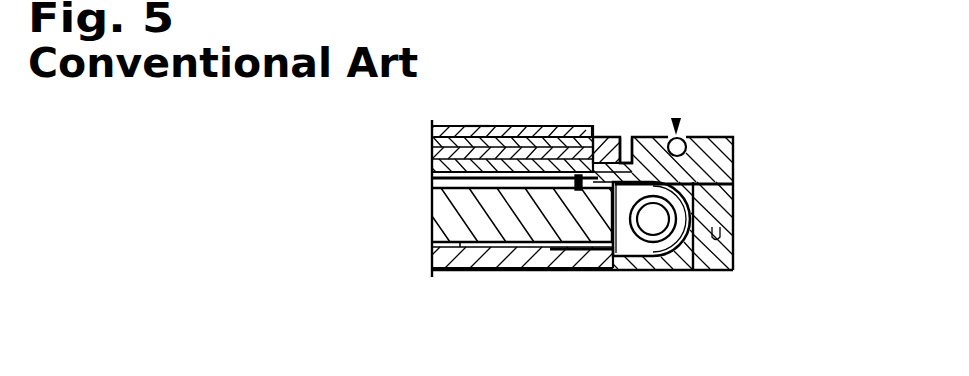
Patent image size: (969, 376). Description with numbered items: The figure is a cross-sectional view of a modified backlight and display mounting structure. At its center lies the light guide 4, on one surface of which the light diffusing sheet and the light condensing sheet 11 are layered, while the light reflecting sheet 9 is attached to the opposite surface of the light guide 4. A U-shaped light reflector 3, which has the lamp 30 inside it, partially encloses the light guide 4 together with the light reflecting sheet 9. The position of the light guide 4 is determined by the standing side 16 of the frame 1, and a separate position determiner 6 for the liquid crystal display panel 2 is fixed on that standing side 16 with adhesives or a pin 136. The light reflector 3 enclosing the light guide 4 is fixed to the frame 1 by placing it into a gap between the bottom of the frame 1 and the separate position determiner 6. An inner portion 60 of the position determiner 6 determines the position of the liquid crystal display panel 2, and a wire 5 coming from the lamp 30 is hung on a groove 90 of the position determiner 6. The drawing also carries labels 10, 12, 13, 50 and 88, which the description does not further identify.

The frame 1 is at (497, 258).
The liquid crystal display panel 2 is at (428, 127).
The light reflector 3 is at (622, 271).
The light guide 4 is at (540, 226).
The wire 5 is at (681, 142).
The position determiner 6 is at (730, 137).
The light reflecting sheet 9 is at (458, 249).
The assembly 10 is at (432, 205).
The light condensing sheet 11 is at (432, 178).
The top layer 12 is at (540, 140).
The end block 13 is at (581, 130).
The standing side 16 is at (728, 228).
The lamp 30 is at (657, 228).
The bearing pocket 50 is at (685, 252).
The inner portion 60 is at (625, 150).
The surface 88 is at (477, 128).
The groove 90 is at (677, 122).
The pin 136 is at (735, 190).